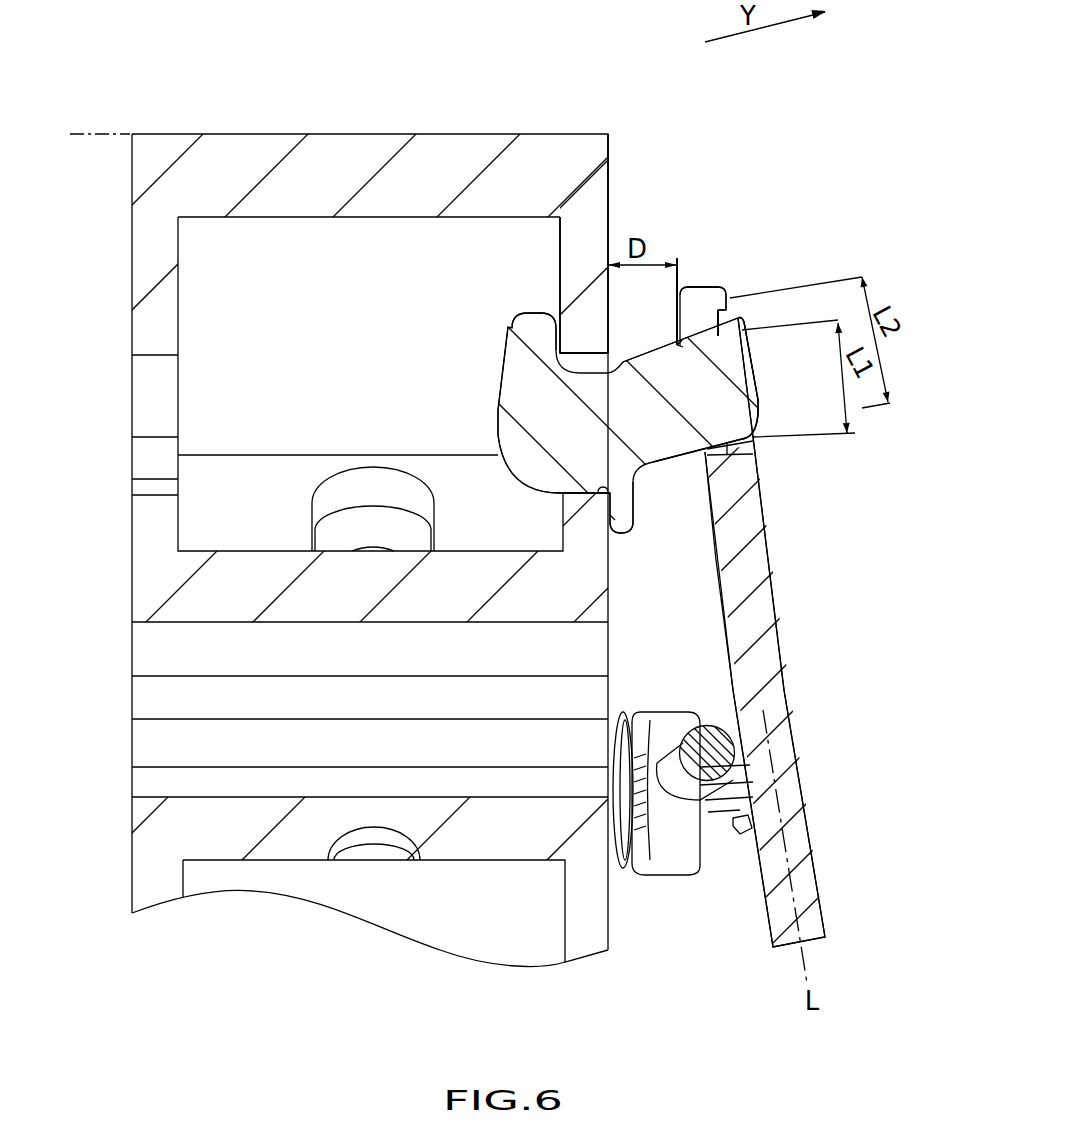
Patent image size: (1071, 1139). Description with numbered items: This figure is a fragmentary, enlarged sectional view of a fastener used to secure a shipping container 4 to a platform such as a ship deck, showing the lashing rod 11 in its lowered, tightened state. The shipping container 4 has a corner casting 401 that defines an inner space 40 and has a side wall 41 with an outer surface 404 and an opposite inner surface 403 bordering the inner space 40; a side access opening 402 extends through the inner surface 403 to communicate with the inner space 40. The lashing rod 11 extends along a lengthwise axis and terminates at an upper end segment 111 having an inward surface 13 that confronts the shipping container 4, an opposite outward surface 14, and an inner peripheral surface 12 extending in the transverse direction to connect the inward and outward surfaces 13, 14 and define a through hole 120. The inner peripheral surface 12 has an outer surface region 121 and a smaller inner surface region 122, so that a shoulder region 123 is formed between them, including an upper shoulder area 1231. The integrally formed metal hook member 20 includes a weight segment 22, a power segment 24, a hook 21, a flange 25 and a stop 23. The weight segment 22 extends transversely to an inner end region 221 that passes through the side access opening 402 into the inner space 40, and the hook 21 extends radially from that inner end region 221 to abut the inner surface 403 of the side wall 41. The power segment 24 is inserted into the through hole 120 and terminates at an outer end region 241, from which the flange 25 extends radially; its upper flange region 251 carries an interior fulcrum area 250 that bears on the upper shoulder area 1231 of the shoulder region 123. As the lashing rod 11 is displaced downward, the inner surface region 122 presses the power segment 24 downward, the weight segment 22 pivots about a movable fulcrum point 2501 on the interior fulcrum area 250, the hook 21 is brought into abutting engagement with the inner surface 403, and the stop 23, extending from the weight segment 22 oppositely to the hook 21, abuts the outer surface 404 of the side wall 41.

The shipping container 4 is at (112, 128).
The inner space 40 is at (268, 252).
The corner casting 401 is at (357, 152).
The side access opening 402 is at (583, 363).
The inner surface 403 is at (560, 292).
The outer surface 404 is at (608, 215).
The side wall 41 is at (583, 207).
The hook member 20 is at (480, 354).
The hook 21 is at (533, 320).
The weight segment 22 is at (576, 455).
The inner end region 221 is at (503, 430).
The stop 23 is at (624, 534).
The power segment 24 is at (698, 413).
The outer end region 241 is at (740, 375).
The flange 25 is at (748, 326).
The interior fulcrum area 250 is at (730, 308).
The movable fulcrum point 2501 is at (804, 245).
The upper flange region 251 is at (735, 284).
The lashing rod 11 is at (822, 772).
The upper end segment 111 is at (758, 520).
The inward surface 13 is at (706, 478).
The inner peripheral surface 12 is at (665, 203).
The inner surface region 122 is at (690, 332).
The outer surface region 121 is at (717, 332).
The shoulder region 123 is at (764, 243).
The upper shoulder area 1231 is at (682, 338).
The through hole 120 is at (685, 338).
The outward surface 14 is at (755, 468).